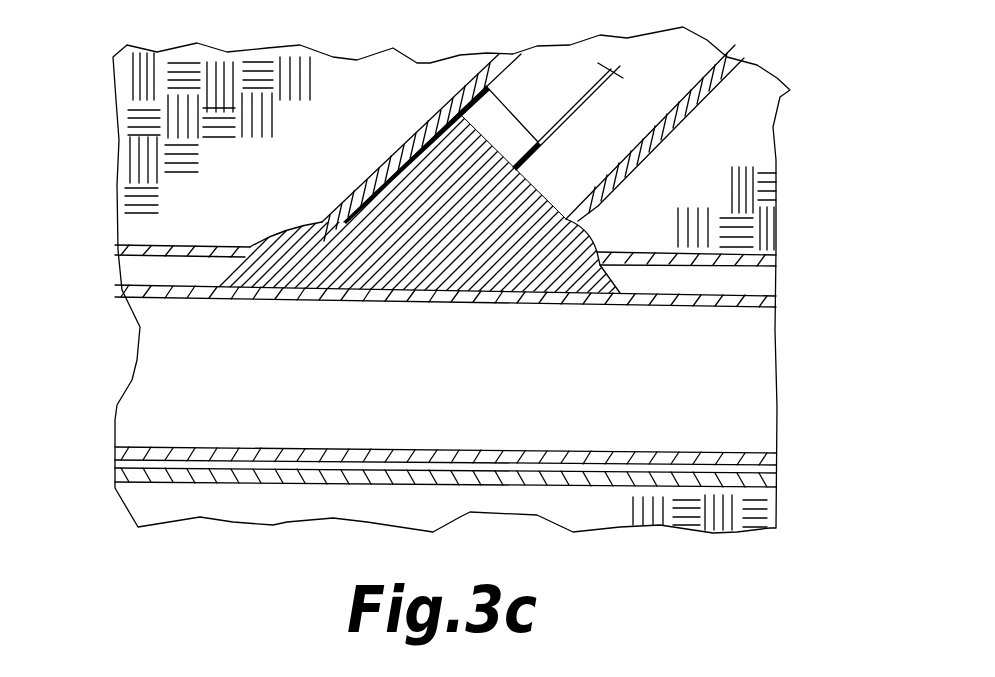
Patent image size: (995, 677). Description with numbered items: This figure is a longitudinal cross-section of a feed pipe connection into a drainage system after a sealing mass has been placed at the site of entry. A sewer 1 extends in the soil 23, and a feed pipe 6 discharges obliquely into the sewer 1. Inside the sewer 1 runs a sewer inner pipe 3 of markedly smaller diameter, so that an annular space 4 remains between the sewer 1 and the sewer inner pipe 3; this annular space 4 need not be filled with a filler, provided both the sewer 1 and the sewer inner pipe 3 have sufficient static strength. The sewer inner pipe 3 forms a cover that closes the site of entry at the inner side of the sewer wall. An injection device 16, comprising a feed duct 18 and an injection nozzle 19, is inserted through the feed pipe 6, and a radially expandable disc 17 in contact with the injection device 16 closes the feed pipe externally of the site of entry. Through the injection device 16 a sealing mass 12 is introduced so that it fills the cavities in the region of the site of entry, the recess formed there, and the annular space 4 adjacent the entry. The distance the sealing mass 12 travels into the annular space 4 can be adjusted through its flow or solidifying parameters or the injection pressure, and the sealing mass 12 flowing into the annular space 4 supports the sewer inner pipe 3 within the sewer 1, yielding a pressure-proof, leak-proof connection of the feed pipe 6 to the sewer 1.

The sewer 1 is at (106, 248).
The sewer inner pipe 3 is at (109, 287).
The annular space 4 is at (428, 274).
The feed pipe 6 is at (395, 158).
The sealing mass 12 is at (415, 203).
The injection device 16 is at (553, 145).
The radially expandable disc 17 is at (508, 133).
The feed duct 18 is at (612, 70).
The injection nozzle 19 is at (533, 153).
The soil 23 is at (451, 280).